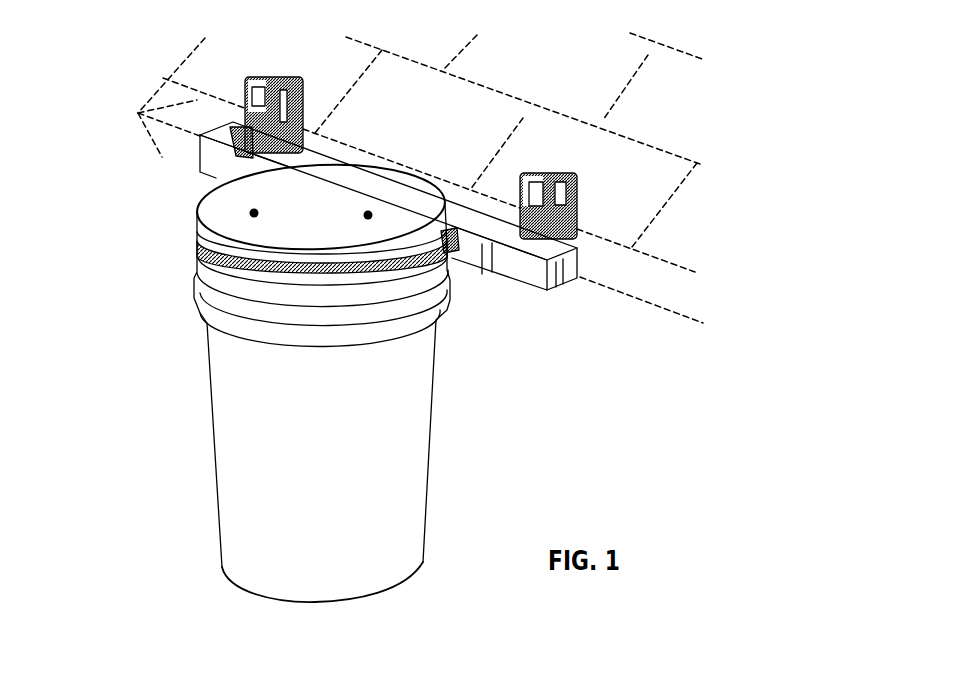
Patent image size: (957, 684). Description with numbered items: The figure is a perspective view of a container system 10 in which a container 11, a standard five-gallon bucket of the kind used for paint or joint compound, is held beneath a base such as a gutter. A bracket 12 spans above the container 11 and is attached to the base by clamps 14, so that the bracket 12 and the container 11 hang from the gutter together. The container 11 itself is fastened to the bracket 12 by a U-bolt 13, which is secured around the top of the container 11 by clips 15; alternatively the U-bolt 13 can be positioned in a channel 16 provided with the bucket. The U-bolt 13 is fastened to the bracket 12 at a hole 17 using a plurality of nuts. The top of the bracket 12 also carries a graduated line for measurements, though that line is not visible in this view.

The container system 10 is at (150, 278).
The container 11 is at (432, 491).
The bracket 12 is at (557, 278).
The U-bolt 13 is at (452, 285).
The clamps 14 is at (577, 205).
The clips 15 is at (437, 259).
The channel 16 is at (232, 278).
The hole 17 is at (456, 236).